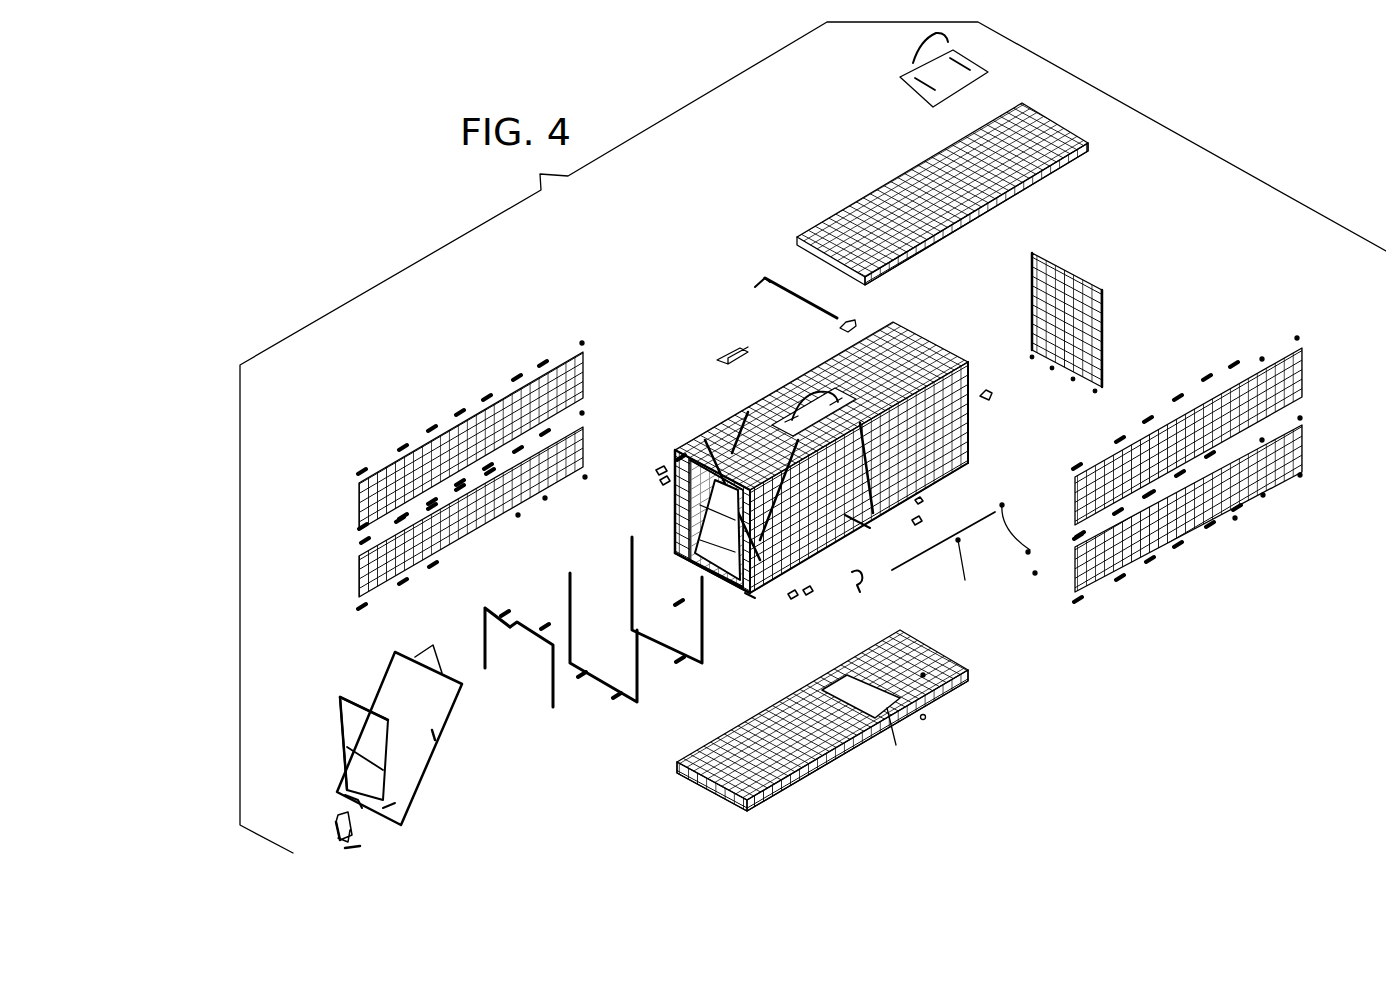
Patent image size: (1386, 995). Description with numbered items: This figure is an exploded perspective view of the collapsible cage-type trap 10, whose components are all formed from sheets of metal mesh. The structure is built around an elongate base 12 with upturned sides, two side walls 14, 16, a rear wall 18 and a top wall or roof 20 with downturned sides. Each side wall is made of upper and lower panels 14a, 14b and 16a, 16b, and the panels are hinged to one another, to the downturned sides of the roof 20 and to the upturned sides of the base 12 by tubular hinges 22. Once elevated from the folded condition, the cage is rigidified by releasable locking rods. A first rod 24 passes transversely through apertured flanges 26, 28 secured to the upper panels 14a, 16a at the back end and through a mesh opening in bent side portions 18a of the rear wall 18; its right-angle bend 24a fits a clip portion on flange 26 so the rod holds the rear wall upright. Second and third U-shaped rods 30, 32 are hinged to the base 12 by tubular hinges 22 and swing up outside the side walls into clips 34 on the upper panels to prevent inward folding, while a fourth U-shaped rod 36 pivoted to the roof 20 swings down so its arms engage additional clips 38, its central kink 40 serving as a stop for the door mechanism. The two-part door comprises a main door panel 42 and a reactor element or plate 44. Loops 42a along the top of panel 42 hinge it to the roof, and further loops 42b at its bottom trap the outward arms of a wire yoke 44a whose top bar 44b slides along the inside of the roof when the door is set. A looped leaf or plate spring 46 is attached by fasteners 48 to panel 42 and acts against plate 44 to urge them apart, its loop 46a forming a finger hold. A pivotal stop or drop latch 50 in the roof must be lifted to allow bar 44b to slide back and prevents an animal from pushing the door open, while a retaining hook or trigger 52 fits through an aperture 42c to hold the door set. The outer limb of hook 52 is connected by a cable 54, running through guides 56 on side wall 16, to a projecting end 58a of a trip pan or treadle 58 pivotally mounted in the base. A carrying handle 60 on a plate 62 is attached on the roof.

The collapsible cage-type trap 10 is at (738, 408).
The elongate base 12 is at (820, 765).
The side wall 14 is at (678, 517).
The side wall upper panel 14a is at (357, 505).
The side wall lower panel 14b is at (360, 575).
The side wall 16 is at (972, 423).
The side wall upper panel 16a is at (1302, 370).
The side wall lower panel 16b is at (1300, 455).
The rear wall 18 is at (1105, 310).
The bent side portions 18a is at (1035, 295).
The top wall or roof 20 is at (900, 178).
The tubular hinges 22 is at (403, 447).
The first rod 24 is at (780, 278).
The right-angle bend 24a is at (757, 285).
The apertured flange 26 is at (850, 324).
The apertured flange 28 is at (1000, 390).
The second U-shaped rod 30 is at (702, 632).
The third U-shaped rod 32 is at (646, 685).
The clips 34 is at (658, 470).
The fourth U-shaped rod 36 is at (485, 612).
The additional clips 38 is at (658, 477).
The central kink 40 is at (512, 630).
The main door panel 42 is at (398, 672).
The loops 42a is at (445, 672).
The further loops 42b is at (345, 795).
The aperture 42c is at (437, 738).
The reactor element or plate 44 is at (350, 760).
The wire yoke 44a is at (340, 707).
The top bar 44b is at (353, 700).
The looped leaf or plate spring 46 is at (337, 821).
The loop 46a is at (336, 835).
The fasteners 48 is at (350, 848).
The pivotal stop or drop latch 50 is at (730, 357).
The retaining hook or trigger 52 is at (865, 578).
The cable 54 is at (980, 530).
The guides 56 is at (1030, 550).
The trip pan or treadle 58 is at (870, 722).
The projecting end 58a is at (918, 502).
The carrying handle 60 is at (912, 50).
The plate 62 is at (905, 77).